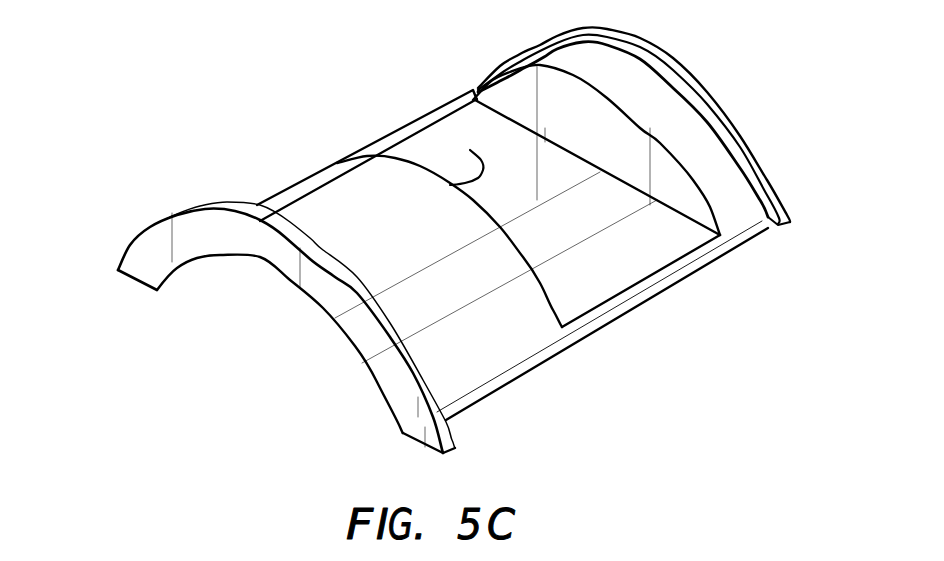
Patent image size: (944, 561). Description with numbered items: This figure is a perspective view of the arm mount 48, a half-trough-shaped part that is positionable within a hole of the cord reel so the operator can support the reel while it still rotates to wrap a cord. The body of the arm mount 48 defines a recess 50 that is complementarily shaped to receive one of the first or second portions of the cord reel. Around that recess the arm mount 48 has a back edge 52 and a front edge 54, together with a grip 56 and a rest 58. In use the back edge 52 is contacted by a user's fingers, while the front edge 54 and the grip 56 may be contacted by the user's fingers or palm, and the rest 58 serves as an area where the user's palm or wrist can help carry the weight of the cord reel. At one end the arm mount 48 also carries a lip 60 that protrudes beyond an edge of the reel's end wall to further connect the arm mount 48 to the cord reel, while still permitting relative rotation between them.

The arm mount 48 is at (307, 93).
The recess 50 is at (761, 218).
The back edge 52 is at (511, 88).
The front edge 54 is at (470, 150).
The grip 56 is at (639, 266).
The rest 58 is at (368, 188).
The lip 60 is at (148, 228).